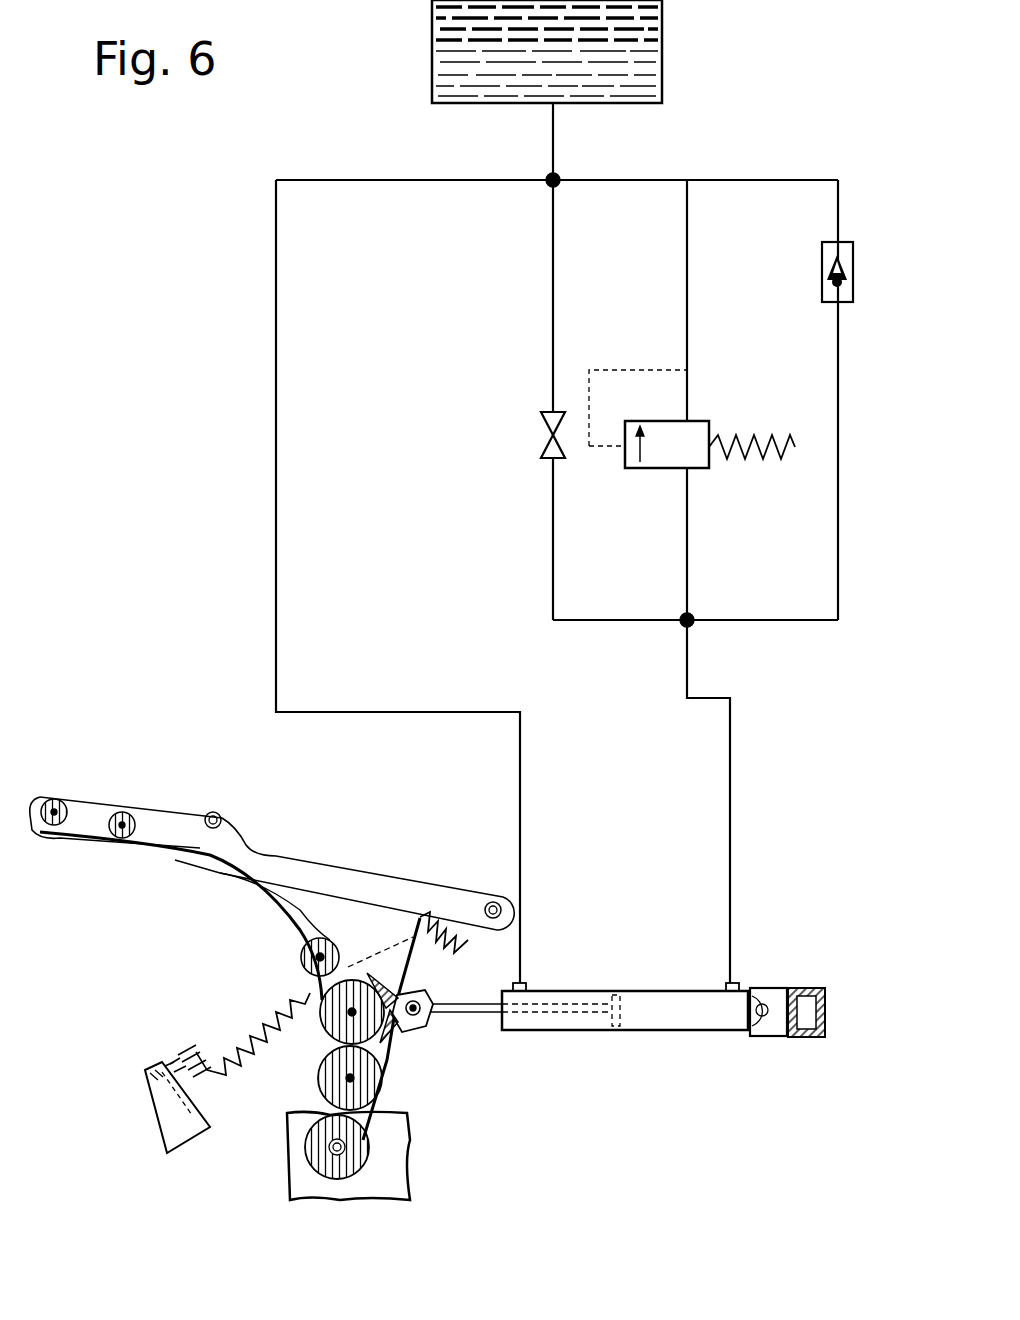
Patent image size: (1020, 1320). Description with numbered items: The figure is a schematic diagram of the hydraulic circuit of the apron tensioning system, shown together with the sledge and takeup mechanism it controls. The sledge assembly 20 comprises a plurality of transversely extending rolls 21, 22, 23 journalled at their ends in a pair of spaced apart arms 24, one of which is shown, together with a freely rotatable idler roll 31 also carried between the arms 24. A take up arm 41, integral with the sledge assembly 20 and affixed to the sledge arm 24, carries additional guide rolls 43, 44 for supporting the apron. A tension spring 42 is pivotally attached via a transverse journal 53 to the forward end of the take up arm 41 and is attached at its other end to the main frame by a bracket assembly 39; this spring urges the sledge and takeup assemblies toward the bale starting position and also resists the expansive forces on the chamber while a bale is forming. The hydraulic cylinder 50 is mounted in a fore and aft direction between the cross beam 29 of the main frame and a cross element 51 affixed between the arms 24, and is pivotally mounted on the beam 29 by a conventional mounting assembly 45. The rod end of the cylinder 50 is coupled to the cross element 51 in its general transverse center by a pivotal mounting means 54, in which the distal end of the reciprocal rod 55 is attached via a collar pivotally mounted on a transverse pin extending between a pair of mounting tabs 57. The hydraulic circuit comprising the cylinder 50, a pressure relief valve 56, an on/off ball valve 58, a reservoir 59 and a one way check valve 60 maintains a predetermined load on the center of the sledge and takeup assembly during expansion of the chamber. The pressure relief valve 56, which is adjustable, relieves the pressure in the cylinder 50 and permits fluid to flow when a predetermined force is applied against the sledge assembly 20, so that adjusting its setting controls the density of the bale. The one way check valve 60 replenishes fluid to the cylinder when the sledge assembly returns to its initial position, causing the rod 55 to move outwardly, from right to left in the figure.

The sledge assembly 20 is at (222, 967).
The roll 21 is at (322, 1043).
The roll 22 is at (318, 1083).
The roll 23 is at (305, 1148).
The arm 24 is at (300, 905).
The cross beam 29 is at (810, 985).
The idler roll 31 is at (322, 938).
The bracket assembly 39 is at (172, 1126).
The take up arm 41 is at (300, 862).
The tension spring 42 is at (232, 1023).
The guide roll 43 is at (60, 800).
The guide roll 44 is at (126, 812).
The mounting assembly 45 is at (766, 986).
The hydraulic cylinder 50 is at (668, 1032).
The cross element 51 is at (398, 1040).
The journal 53 is at (494, 902).
The pivotal mounting means 54 is at (432, 996).
The reciprocal rod 55 is at (478, 1020).
The pressure relief valve 56 is at (707, 422).
The mounting tabs 57 is at (430, 1030).
The on/off ball valve 58 is at (540, 434).
The reservoir 59 is at (432, 57).
The one way check valve 60 is at (822, 270).